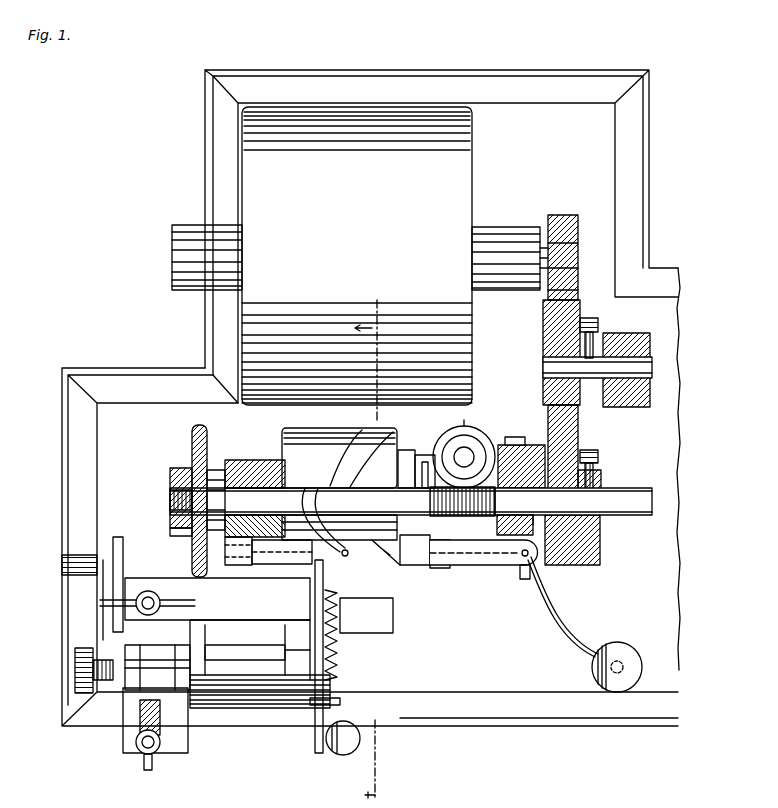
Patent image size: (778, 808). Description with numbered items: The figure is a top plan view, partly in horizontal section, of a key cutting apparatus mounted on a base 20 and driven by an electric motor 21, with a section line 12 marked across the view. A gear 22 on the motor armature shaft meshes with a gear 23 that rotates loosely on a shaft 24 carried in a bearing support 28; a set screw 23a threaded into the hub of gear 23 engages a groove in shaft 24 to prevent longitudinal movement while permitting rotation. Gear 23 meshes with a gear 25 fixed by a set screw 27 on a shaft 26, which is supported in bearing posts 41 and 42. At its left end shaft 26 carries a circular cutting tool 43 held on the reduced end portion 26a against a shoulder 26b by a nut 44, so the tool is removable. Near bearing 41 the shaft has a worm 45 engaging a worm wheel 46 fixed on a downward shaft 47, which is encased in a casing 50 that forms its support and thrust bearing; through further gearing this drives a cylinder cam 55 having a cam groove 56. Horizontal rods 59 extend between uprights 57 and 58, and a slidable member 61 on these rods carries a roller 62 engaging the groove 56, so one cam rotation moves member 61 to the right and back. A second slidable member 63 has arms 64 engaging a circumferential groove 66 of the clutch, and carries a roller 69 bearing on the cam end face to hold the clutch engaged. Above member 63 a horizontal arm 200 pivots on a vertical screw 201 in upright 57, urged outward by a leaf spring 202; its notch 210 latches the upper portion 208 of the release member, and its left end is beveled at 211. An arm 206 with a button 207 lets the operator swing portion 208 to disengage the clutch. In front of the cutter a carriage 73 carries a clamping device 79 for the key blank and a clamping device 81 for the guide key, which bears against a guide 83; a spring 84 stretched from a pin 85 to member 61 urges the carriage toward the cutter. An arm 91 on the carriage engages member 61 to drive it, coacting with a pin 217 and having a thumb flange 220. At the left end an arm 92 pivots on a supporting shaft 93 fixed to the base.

The section line 12 is at (353, 550).
The base 20 is at (605, 200).
The electric motor 21 is at (360, 256).
The gear 22 is at (566, 215).
The gear 23 is at (548, 322).
The set screw 23a is at (600, 325).
The shaft 24 is at (548, 368).
The gear 25 is at (600, 533).
The shaft 26 is at (600, 497).
The reduced end portion 26a is at (170, 492).
The shoulder 26b is at (200, 470).
The set screw 27 is at (598, 456).
The bearing support 28 is at (618, 400).
The bearing post 41 is at (521, 470).
The bearing post 42 is at (250, 460).
The circular cutting tool 43 is at (190, 437).
The nut 44 is at (170, 516).
The worm 45 is at (428, 500).
The worm wheel 46 is at (464, 457).
The shaft 47 is at (470, 440).
The casing 50 is at (462, 420).
The cylinder cam 55 is at (308, 420).
The cam groove 56 is at (370, 440).
The upright 57 is at (525, 580).
The upright 58 is at (225, 552).
The horizontal rod 59 is at (259, 629).
The slidable member 61 is at (300, 520).
The roller 62 is at (295, 545).
The second slidable member 63 is at (430, 570).
The arm 64 is at (405, 450).
The circumferential groove 66 is at (425, 455).
The roller 69 is at (400, 525).
The carriage 73 is at (270, 705).
The clamping device 79 is at (130, 580).
The clamping device 81 is at (185, 668).
The guide 83 is at (205, 700).
The spring 84 is at (332, 650).
The projecting pin 85 is at (310, 705).
The arm 91 is at (325, 685).
The arm 92 is at (115, 552).
The supporting shaft 93 is at (100, 660).
The horizontal arm 200 is at (500, 570).
The vertical screw 201 is at (532, 554).
The leaf spring 202 is at (515, 520).
The arm 206 is at (580, 630).
The button 207 is at (592, 672).
The upper portion 208 is at (436, 606).
The notch 210 is at (455, 570).
The beveled end 211 is at (348, 555).
The pin 217 is at (320, 665).
The projecting flange 220 is at (340, 755).